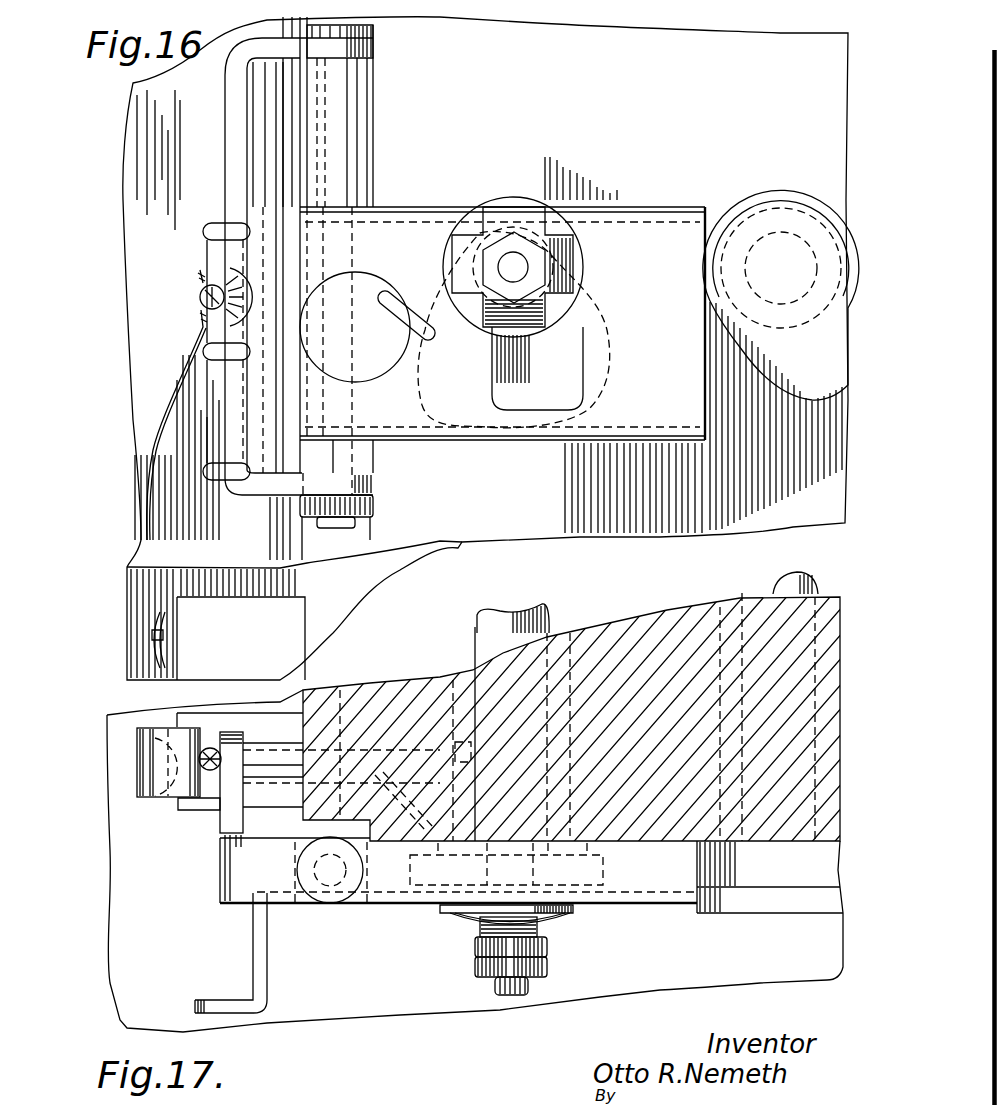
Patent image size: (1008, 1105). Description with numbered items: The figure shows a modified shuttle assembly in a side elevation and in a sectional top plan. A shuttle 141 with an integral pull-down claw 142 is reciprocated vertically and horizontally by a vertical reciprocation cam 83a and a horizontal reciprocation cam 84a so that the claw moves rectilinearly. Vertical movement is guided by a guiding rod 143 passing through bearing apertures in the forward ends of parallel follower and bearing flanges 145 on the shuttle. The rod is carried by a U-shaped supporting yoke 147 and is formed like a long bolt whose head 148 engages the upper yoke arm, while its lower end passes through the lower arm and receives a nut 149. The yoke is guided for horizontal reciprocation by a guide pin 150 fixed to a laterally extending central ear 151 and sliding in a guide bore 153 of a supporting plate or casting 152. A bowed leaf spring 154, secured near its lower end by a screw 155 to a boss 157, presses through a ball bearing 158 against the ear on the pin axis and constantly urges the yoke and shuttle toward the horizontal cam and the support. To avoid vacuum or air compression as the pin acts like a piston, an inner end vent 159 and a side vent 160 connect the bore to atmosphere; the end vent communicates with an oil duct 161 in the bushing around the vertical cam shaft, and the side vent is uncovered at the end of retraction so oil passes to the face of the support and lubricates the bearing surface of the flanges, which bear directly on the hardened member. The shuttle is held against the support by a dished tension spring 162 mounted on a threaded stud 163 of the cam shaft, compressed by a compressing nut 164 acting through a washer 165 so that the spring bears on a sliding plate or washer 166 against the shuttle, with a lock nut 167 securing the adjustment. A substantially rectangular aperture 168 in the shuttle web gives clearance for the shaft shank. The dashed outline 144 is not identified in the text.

In FIG. 16, the shuttle 141 is at (650, 210).
In FIG. 17, the shuttle 141 is at (420, 903).
In FIG. 16, the pull-down claw 142 is at (267, 410).
In FIG. 17, the pull-down claw 142 is at (243, 1000).
In FIG. 16, the guiding rod 143 is at (353, 68).
In FIG. 17, the guiding rod 143 is at (357, 903).
In FIG. 16, the pipe outline 144 is at (357, 217).
In FIG. 16, the follower and bearing flanges 145 is at (640, 227).
In FIG. 17, the follower and bearing flanges 145 is at (390, 880).
In FIG. 16, the supporting yoke 147 is at (235, 163).
In FIG. 17, the supporting yoke 147 is at (233, 862).
In FIG. 16, the head 148 is at (375, 32).
In FIG. 17, the head 148 is at (323, 897).
In FIG. 16, the nut 149 is at (375, 507).
In FIG. 16, the guide pin 150 is at (247, 297).
In FIG. 17, the guide pin 150 is at (267, 750).
In FIG. 16, the central ear 151 is at (223, 272).
In FIG. 17, the central ear 151 is at (233, 797).
In FIG. 17, the supporting plate or casting 152 is at (400, 707).
In FIG. 17, the guide bore 153 is at (342, 690).
In FIG. 16, the bowed leaf spring 154 is at (205, 325).
In FIG. 17, the bowed leaf spring 154 is at (157, 790).
In FIG. 16, the screw 155 is at (160, 627).
In FIG. 16, the boss 157 is at (193, 610).
In FIG. 17, the boss 157 is at (187, 810).
In FIG. 16, the ball bearing 158 is at (205, 298).
In FIG. 17, the ball bearing 158 is at (217, 777).
In FIG. 17, the inner end vent 159 is at (477, 720).
In FIG. 16, the side vent 160 is at (440, 340).
In FIG. 17, the side vent 160 is at (377, 797).
In FIG. 17, the oil duct 161 is at (470, 677).
In FIG. 16, the dished tension spring 162 is at (533, 227).
In FIG. 17, the dished tension spring 162 is at (567, 925).
In FIG. 16, the threaded stud 163 is at (520, 267).
In FIG. 17, the threaded stud 163 is at (500, 990).
In FIG. 17, the compressing nut 164 is at (547, 947).
In FIG. 17, the washer 165 is at (537, 940).
In FIG. 16, the sliding plate or washer 166 is at (560, 308).
In FIG. 17, the sliding plate or washer 166 is at (580, 908).
In FIG. 16, the lock nut 167 is at (493, 250).
In FIG. 17, the lock nut 167 is at (547, 970).
In FIG. 16, the aperture 168 is at (583, 357).
In FIG. 16, the vertical reciprocation cam 83a is at (547, 390).
In FIG. 17, the vertical reciprocation cam 83a is at (603, 858).
In FIG. 16, the horizontal reciprocation cam 84a is at (823, 387).
In FIG. 17, the horizontal reciprocation cam 84a is at (787, 903).